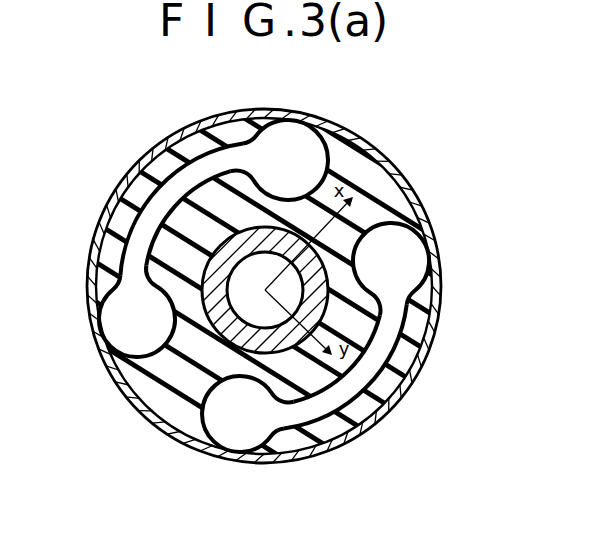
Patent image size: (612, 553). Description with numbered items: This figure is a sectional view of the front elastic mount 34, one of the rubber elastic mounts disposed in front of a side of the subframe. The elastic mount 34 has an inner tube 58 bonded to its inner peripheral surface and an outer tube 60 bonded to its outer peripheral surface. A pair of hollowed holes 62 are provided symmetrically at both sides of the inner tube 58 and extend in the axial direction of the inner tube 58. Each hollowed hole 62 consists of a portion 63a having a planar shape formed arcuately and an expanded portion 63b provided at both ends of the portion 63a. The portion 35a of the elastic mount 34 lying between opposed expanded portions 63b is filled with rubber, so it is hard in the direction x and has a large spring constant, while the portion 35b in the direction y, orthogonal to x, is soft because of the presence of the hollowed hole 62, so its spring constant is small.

The elastic mount 34 is at (150, 384).
The portion of the elastic mount 35a is at (348, 157).
The portion of the elastic mount 35b is at (160, 243).
The inner tube 58 is at (322, 272).
The outer tube 60 is at (125, 187).
The hollowed hole 62 is at (120, 282).
The portion having a planar shape formed arcuately 63a is at (205, 168).
The expanded portion 63b is at (300, 135).